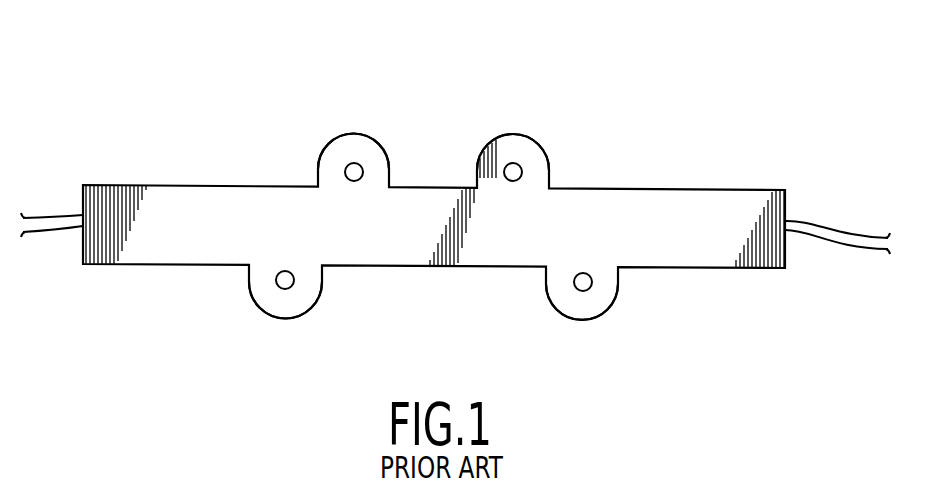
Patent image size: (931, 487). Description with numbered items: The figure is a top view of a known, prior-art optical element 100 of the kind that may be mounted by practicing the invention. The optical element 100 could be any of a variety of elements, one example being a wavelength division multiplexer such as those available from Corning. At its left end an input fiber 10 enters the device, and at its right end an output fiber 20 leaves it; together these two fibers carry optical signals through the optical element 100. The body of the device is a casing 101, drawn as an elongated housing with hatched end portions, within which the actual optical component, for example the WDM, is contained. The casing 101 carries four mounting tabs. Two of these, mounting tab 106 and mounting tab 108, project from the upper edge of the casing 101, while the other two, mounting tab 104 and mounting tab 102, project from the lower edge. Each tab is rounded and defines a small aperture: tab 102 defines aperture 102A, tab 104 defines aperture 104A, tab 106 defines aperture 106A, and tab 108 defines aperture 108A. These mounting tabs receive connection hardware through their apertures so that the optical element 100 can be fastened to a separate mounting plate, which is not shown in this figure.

The input fiber 10 is at (44, 233).
The output fiber 20 is at (826, 248).
The optical element 100 is at (730, 98).
The casing 101 is at (693, 190).
The mounting tab 102 is at (618, 292).
The aperture 102A is at (575, 285).
The mounting tab 104 is at (248, 290).
The aperture 104A is at (293, 283).
The mounting tab 106 is at (377, 137).
The aperture 106A is at (348, 166).
The mounting tab 108 is at (529, 137).
The aperture 108A is at (522, 172).